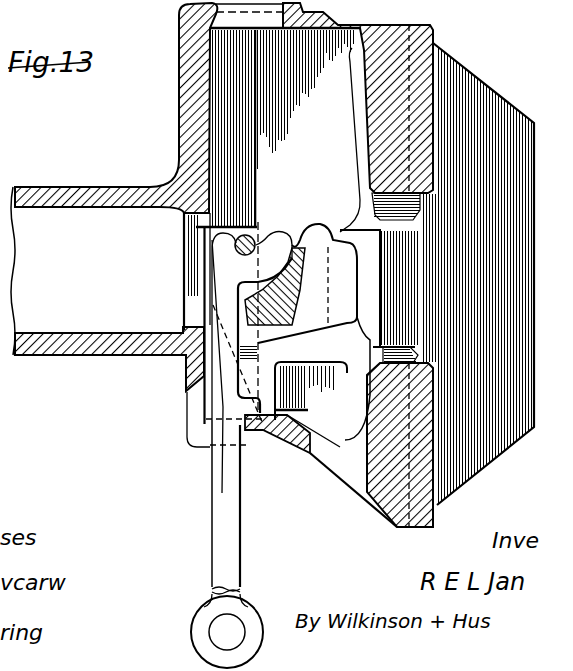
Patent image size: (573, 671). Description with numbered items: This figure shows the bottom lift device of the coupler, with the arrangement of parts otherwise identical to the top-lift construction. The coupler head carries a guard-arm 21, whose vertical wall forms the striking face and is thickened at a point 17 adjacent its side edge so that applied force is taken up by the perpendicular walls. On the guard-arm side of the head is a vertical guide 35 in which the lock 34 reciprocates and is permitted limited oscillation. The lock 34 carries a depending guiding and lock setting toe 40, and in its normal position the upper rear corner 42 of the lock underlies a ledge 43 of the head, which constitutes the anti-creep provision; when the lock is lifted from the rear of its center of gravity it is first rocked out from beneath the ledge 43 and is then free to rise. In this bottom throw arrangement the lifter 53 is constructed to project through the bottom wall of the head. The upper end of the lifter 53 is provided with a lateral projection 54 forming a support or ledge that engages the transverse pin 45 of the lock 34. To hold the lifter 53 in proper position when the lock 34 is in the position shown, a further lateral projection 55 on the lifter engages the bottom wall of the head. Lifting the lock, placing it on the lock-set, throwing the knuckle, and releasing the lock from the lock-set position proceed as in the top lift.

The thickened wall point 17 is at (178, 58).
The vertical guide 35 is at (222, 128).
The upper rear corner of the lock 42 is at (214, 230).
The ledge of the head 43 is at (200, 228).
The transverse pin of the lock 45 is at (232, 248).
The lateral projection on the lifter 54 is at (267, 270).
The lock 34 is at (298, 291).
The lock setting toe 40 is at (243, 357).
The lateral projection on the lifter 55 is at (262, 428).
The lifter 53 is at (222, 493).
The guard-arm 21 is at (520, 208).